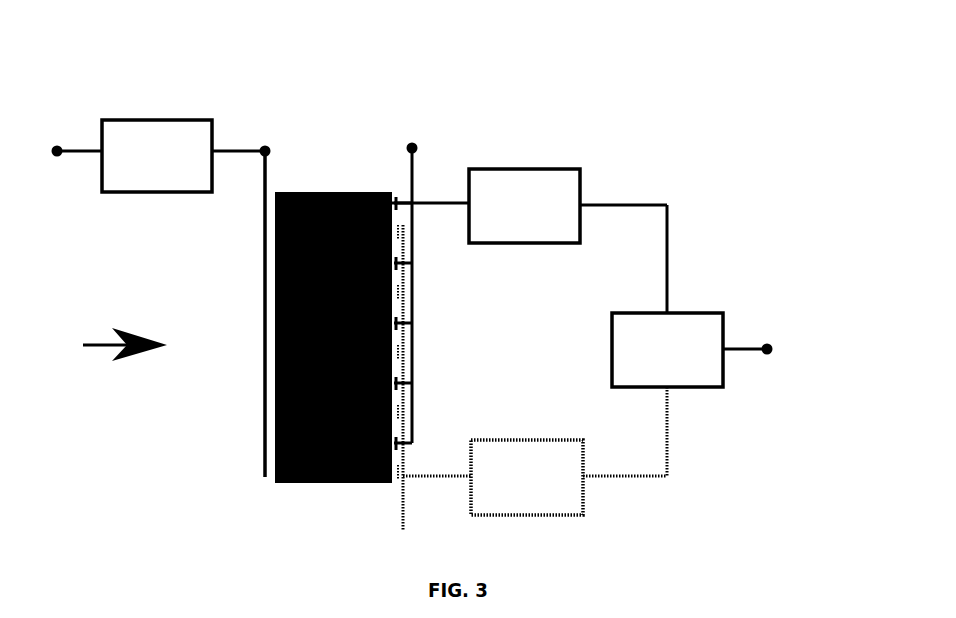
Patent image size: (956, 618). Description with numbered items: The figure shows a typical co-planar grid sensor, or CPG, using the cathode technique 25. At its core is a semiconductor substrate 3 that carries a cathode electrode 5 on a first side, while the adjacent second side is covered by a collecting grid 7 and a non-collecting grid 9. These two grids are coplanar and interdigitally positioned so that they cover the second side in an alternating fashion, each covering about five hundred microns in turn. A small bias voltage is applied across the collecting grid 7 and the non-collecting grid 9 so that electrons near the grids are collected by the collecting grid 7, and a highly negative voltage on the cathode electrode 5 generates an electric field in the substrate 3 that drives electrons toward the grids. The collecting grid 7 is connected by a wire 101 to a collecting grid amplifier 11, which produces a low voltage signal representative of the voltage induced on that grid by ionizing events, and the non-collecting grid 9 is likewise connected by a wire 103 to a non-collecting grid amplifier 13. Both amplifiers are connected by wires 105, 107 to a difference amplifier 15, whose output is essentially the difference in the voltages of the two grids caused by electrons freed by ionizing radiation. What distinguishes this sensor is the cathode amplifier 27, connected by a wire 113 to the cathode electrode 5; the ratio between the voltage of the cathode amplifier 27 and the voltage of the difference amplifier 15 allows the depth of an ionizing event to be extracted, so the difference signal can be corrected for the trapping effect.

The cathode amplifier 27 is at (102, 119).
The wire 113 is at (240, 153).
The cathode electrode 5 is at (263, 149).
The semiconductor substrate 3 is at (311, 192).
The collecting grid 7 is at (412, 148).
The non-collecting grid 9 is at (403, 530).
The wire 101 is at (437, 200).
The collecting grid amplifier 11 is at (580, 169).
The wire 105 is at (668, 205).
The difference amplifier 15 is at (723, 313).
The wire 103 is at (423, 476).
The non-collecting grid amplifier 13 is at (583, 515).
The wire 107 is at (667, 476).
The CPG using the cathode technique 25 is at (107, 344).